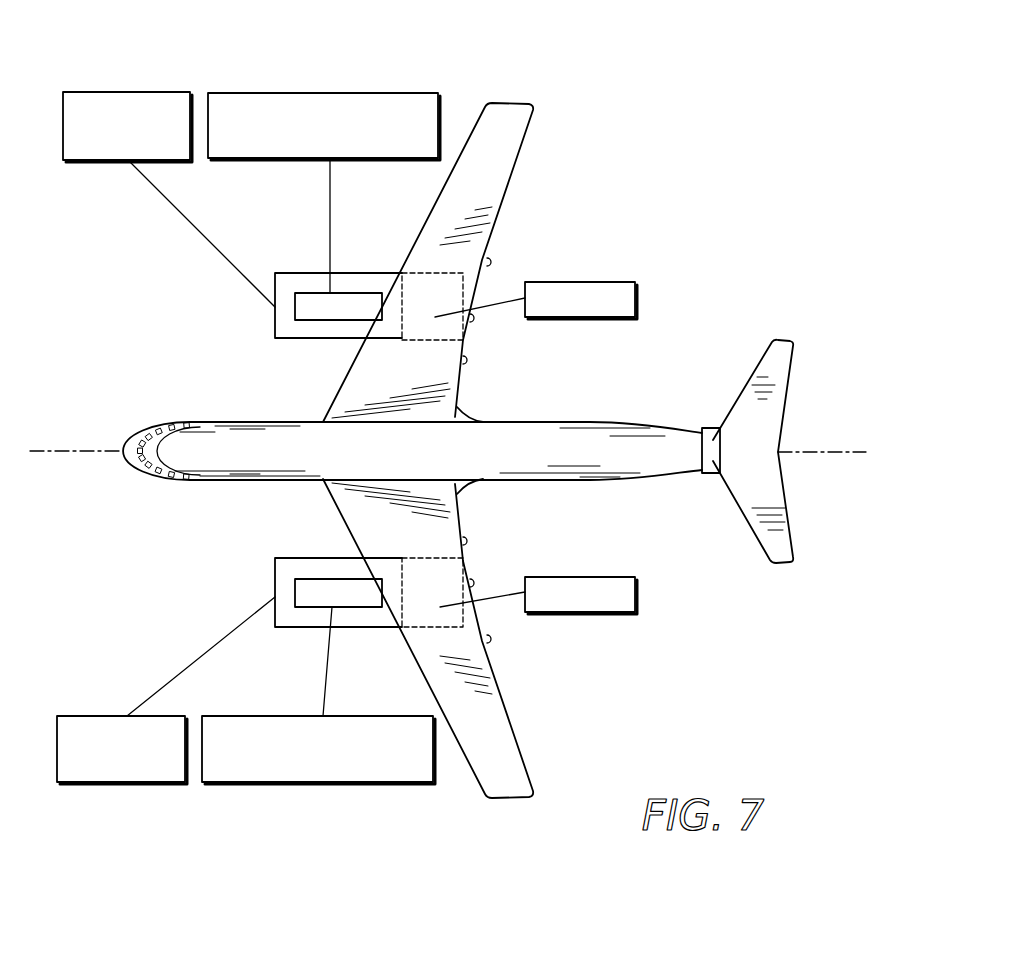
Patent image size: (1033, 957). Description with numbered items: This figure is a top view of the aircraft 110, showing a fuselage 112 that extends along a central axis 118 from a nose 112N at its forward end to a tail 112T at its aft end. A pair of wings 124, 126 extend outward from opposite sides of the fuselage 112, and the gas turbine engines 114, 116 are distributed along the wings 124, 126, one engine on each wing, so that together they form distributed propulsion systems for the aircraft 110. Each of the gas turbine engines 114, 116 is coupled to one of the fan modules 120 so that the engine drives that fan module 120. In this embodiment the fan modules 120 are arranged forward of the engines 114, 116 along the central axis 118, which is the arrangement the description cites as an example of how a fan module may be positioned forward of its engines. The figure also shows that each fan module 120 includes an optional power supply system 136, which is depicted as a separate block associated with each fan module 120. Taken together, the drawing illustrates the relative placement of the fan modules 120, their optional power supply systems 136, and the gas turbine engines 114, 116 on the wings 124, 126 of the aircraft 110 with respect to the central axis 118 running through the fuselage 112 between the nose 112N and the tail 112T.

The aircraft 110 is at (719, 128).
The fuselage 112 is at (513, 430).
The nose 112N is at (119, 449).
The tail 112T is at (787, 427).
The gas turbine engine 114 is at (430, 574).
The gas turbine engine 116 is at (437, 287).
The central axis 118 is at (851, 449).
The fan module 120 is at (121, 89).
The wing 124 is at (483, 735).
The wing 126 is at (480, 170).
The optional power supply system 136 is at (318, 89).